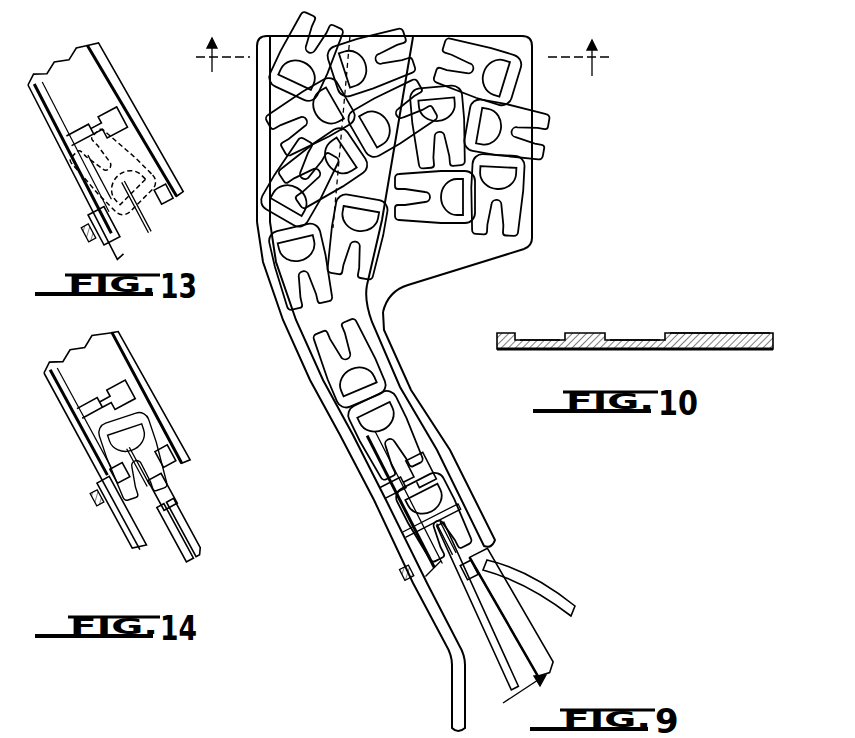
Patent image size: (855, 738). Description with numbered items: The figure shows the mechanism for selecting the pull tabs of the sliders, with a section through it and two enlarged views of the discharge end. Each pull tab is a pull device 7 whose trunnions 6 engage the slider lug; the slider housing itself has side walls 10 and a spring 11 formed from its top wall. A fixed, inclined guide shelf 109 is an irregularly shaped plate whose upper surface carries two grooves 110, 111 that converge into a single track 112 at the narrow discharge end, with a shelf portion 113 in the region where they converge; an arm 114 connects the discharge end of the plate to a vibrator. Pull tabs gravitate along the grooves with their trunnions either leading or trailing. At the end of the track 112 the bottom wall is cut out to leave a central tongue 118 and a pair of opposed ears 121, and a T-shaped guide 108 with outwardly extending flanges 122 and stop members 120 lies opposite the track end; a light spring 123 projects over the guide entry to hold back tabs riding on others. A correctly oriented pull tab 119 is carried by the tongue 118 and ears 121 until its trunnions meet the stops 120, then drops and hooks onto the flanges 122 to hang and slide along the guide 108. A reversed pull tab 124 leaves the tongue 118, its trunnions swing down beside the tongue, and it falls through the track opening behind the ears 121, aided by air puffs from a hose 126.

In FIG. 13, the trunnions 6 is at (112, 122).
In FIG. 9, the pull device 7 is at (422, 525).
In FIG. 13, the pull device 7 is at (103, 173).
In FIG. 9, the side walls 10 is at (404, 45).
In FIG. 9, the spring 11 is at (533, 687).
In FIG. 9, the guide 108 is at (513, 655).
In FIG. 14, the guide 108 is at (190, 533).
In FIG. 9, the guide shelf 109 is at (540, 202).
In FIG. 10, the guide shelf 109 is at (733, 356).
In FIG. 9, the groove 110 is at (285, 36).
In FIG. 10, the groove 110 is at (560, 338).
In FIG. 9, the groove 111 is at (395, 38).
In FIG. 10, the groove 111 is at (645, 338).
In FIG. 9, the track 112 is at (425, 462).
In FIG. 13, the track 112 is at (100, 93).
In FIG. 14, the track 112 is at (110, 365).
In FIG. 9, the shelf portion 113 is at (474, 247).
In FIG. 10, the shelf portion 113 is at (708, 333).
In FIG. 9, the arm 114 is at (430, 607).
In FIG. 14, the arm 114 is at (123, 523).
In FIG. 9, the tongue 118 is at (395, 498).
In FIG. 13, the tongue 118 is at (113, 138).
In FIG. 14, the tongue 118 is at (120, 405).
In FIG. 9, the pull tab 119 is at (448, 515).
In FIG. 14, the pull tab 119 is at (147, 443).
In FIG. 9, the stops 120 is at (478, 565).
In FIG. 14, the stops 120 is at (170, 503).
In FIG. 13, the ears 121 is at (160, 190).
In FIG. 14, the ears 121 is at (118, 473).
In FIG. 9, the flanges 122 is at (510, 625).
In FIG. 14, the flanges 122 is at (200, 548).
In FIG. 9, the spring 123 is at (440, 547).
In FIG. 13, the spring 123 is at (150, 222).
In FIG. 14, the spring 123 is at (160, 493).
In FIG. 9, the pull tab 124 is at (368, 365).
In FIG. 13, the pull tab 124 is at (140, 152).
In FIG. 9, the hose 126 is at (555, 595).